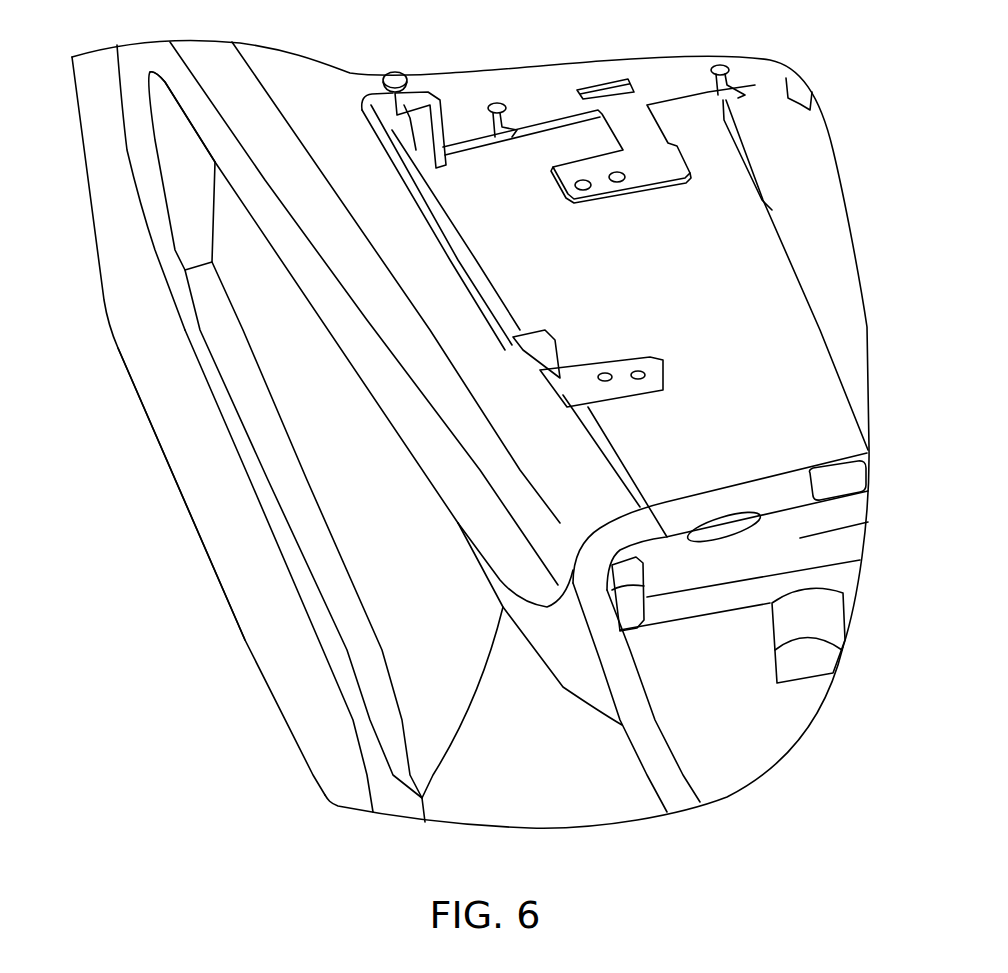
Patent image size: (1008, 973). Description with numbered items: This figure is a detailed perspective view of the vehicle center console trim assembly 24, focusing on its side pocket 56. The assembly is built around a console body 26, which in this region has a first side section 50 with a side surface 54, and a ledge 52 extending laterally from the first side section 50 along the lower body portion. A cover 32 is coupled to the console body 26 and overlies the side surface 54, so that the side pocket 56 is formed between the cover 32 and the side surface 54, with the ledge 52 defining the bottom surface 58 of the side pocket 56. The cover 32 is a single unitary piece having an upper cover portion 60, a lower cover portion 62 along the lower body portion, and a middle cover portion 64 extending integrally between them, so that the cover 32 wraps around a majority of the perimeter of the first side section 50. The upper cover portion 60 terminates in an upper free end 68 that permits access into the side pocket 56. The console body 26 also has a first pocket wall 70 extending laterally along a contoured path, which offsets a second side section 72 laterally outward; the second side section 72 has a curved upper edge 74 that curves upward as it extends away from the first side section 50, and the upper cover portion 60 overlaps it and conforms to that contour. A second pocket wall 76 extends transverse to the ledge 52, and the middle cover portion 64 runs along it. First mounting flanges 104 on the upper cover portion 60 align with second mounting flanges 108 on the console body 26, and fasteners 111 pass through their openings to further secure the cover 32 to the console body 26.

The vehicle center console trim assembly 24 is at (78, 295).
The console body 26 is at (508, 795).
The cover 32 is at (167, 470).
The first side section 50 is at (233, 233).
The ledge 52 is at (230, 357).
The side surface 54 is at (333, 513).
The side pocket 56 is at (282, 350).
The bottom surface 58 is at (340, 573).
The upper cover portion 60 is at (383, 303).
The lower cover portion 62 is at (160, 397).
The middle cover portion 64 is at (100, 110).
The upper free end 68 is at (577, 497).
The first pocket wall 70 is at (460, 727).
The second side section 72 is at (567, 793).
The curved upper edge 74 is at (557, 635).
The second pocket wall 76 is at (175, 143).
The first mounting flanges 104 is at (365, 82).
The second mounting flanges 108 is at (417, 100).
The fasteners 111 is at (393, 71).